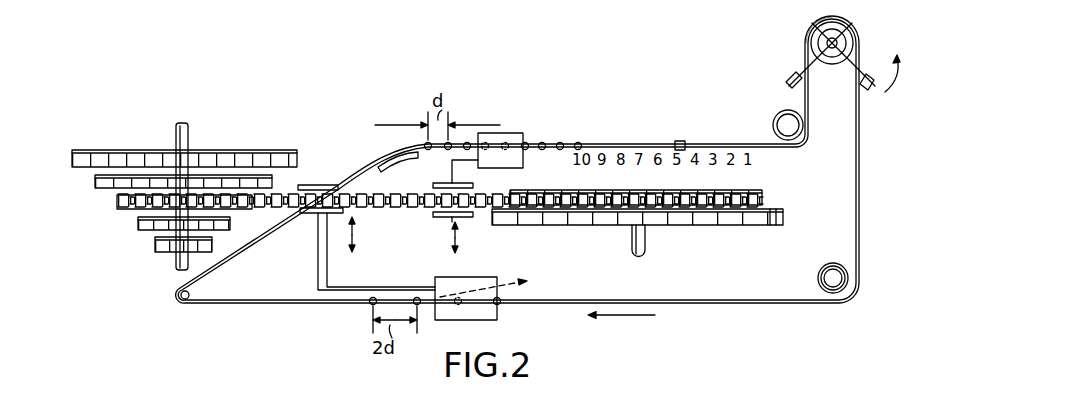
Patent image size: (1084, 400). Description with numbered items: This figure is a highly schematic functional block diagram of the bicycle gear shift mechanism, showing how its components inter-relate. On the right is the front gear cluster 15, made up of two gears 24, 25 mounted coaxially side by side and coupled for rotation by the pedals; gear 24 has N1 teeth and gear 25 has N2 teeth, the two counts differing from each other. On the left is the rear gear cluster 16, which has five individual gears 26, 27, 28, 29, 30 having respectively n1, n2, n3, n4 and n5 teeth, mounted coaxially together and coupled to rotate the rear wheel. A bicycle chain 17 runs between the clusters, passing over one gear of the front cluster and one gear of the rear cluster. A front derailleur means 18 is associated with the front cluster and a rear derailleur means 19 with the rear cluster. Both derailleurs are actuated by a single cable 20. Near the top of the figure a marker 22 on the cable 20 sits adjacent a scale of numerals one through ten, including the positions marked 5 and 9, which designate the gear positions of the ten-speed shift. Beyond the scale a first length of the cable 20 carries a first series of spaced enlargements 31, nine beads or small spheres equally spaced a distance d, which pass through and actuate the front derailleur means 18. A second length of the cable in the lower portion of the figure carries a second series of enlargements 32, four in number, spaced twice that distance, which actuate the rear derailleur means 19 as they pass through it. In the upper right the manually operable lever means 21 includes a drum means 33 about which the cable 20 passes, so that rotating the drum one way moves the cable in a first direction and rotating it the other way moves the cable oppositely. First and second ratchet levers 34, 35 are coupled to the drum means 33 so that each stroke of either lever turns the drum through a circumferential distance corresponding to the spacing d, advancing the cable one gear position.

The first transfer station 5 is at (500, 131).
The second transfer station 9 is at (494, 278).
The front gear cluster 15 is at (654, 217).
The rear gear cluster 16 is at (183, 203).
The bicycle chain 17 is at (383, 210).
The front derailleur means 18 is at (523, 134).
The rear derailleur means 19 is at (490, 315).
The cable 20 is at (740, 142).
The manually operable lever means 21 is at (802, 17).
The marker 22 is at (680, 140).
The front gear 24 is at (693, 213).
The front gear 25 is at (735, 190).
The rear gear 26 is at (293, 150).
The rear gear 27 is at (276, 181).
The rear gear 28 is at (232, 206).
The rear gear 29 is at (222, 233).
The rear gear 30 is at (172, 248).
The first series of spaced enlargements 31 is at (560, 144).
The second series of spaced enlargements 32 is at (496, 284).
The drum means 33 is at (853, 28).
The first ratchet lever 34 is at (873, 90).
The second ratchet lever 35 is at (790, 76).
The number of teeth of first rear gear n1 is at (47, 161).
The number of teeth of second rear gear n2 is at (68, 184).
The number of teeth of third rear gear n3 is at (93, 206).
The number of teeth of fourth rear gear n4 is at (114, 227).
The number of teeth of fifth rear gear n5 is at (133, 247).
The number of teeth of first front gear N1 is at (804, 216).
The number of teeth of second front gear N2 is at (780, 198).